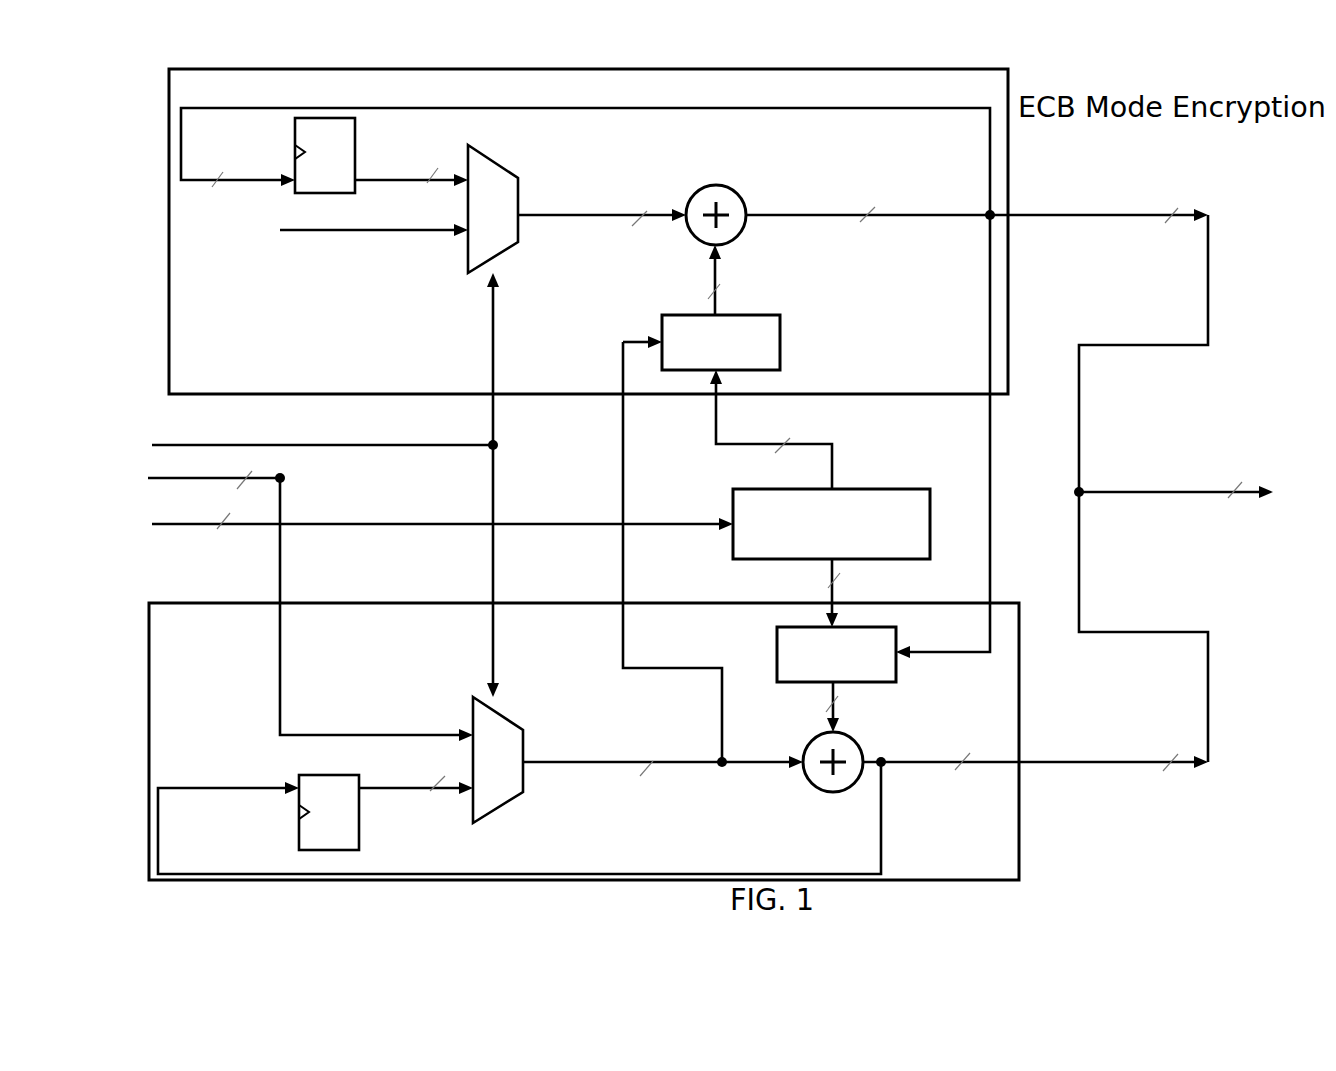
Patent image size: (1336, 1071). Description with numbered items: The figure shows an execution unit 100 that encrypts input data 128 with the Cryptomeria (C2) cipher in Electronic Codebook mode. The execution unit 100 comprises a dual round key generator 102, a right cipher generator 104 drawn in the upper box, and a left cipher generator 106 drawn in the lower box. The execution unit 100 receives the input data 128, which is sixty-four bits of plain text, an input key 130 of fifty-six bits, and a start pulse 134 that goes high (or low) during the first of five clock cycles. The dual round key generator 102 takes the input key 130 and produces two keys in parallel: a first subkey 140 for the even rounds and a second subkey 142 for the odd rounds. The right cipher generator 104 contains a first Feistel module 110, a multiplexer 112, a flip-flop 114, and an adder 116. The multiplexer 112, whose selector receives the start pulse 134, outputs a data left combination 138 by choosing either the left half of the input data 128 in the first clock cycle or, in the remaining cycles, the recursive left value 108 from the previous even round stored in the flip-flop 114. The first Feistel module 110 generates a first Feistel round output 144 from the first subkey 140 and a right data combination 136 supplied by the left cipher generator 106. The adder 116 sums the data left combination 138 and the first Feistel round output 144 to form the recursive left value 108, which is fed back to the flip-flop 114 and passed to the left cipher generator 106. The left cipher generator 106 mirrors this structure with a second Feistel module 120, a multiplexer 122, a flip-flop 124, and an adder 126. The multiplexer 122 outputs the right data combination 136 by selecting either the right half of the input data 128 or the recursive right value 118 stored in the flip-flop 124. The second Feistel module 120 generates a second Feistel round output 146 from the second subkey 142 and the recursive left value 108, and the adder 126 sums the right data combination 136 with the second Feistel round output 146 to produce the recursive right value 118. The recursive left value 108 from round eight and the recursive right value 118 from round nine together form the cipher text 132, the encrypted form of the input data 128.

The execution unit 100 is at (1240, 830).
The dual round key generator 102 is at (831, 524).
The right cipher generator 104 is at (588, 231).
The left cipher generator 106 is at (584, 741).
The recursive left value 108 is at (912, 214).
The first Feistel module 110 is at (781, 335).
The multiplexer 112 is at (507, 168).
The flip-flop 114 is at (295, 130).
The adder 116 is at (710, 186).
The recursive right value 118 is at (900, 765).
The second Feistel module 120 is at (777, 642).
The multiplexer 122 is at (505, 803).
The flip-flop 124 is at (299, 832).
The adder 126 is at (833, 792).
The input data 128 is at (283, 505).
The input key 130 is at (306, 527).
The cipher text 132 is at (1118, 491).
The start pulse 134 is at (326, 445).
The right data combination 136 is at (680, 765).
The data left combination 138 is at (548, 218).
The first subkey 140 is at (833, 460).
The second subkey 142 is at (833, 597).
The first Feistel round output 144 is at (715, 272).
The second Feistel round output 146 is at (828, 690).